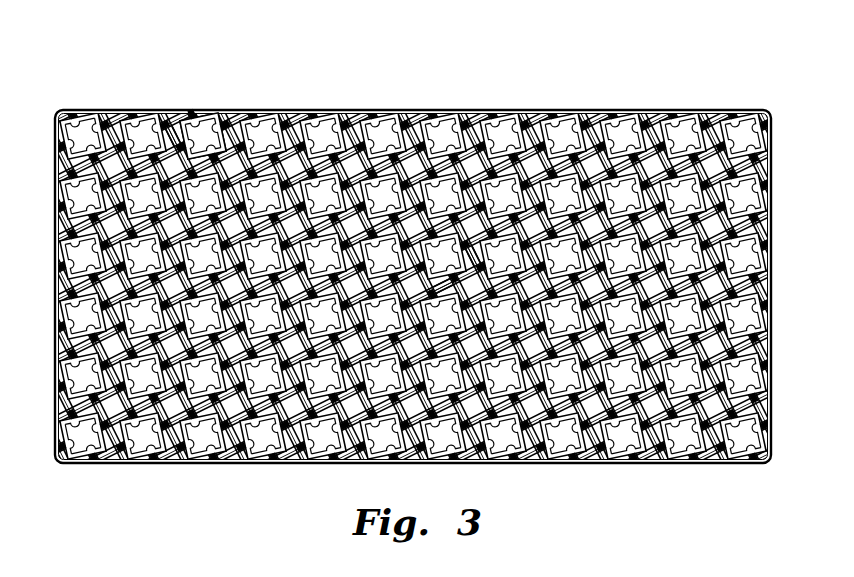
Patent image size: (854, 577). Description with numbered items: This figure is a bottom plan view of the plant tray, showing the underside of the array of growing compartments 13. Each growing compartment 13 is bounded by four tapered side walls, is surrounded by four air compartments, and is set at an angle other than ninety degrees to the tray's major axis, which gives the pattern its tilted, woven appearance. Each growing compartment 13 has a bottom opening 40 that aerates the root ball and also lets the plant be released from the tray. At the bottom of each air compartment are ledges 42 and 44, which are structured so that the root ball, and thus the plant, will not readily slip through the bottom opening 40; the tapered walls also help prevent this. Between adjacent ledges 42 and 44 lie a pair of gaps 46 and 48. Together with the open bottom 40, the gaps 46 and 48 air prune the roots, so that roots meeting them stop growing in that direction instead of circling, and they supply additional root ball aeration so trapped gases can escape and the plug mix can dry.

The growing compartment 13 is at (623, 122).
The bottom opening 40 is at (144, 120).
The ledge 42 is at (215, 145).
The ledge 44 is at (192, 136).
The gap 46 is at (463, 237).
The gap 48 is at (435, 280).